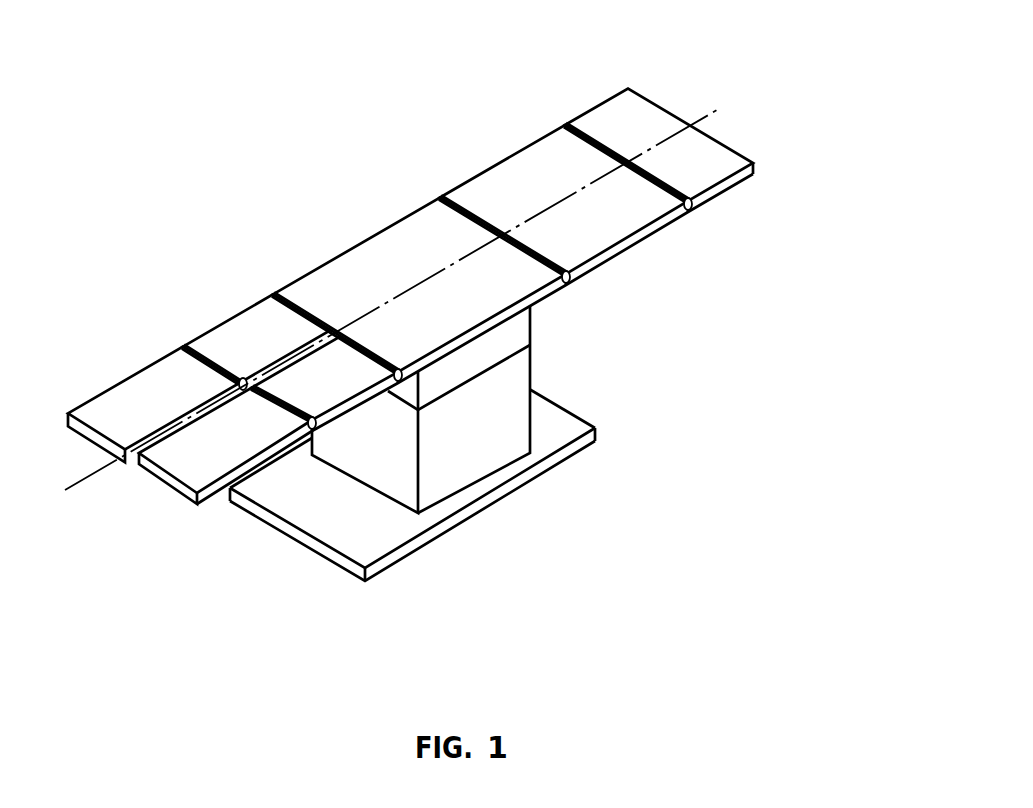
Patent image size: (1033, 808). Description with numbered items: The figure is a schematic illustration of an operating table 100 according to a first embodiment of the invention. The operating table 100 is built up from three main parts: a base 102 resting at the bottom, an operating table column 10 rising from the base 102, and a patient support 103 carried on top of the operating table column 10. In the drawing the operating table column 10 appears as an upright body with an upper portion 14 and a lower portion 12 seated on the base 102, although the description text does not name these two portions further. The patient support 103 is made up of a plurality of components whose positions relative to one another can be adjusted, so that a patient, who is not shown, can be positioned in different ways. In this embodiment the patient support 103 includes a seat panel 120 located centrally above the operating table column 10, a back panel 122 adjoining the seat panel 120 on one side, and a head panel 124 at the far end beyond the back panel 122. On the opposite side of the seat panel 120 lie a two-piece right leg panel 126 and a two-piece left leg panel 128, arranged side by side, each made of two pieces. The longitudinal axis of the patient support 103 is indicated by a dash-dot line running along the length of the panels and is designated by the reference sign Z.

The operating table 100 is at (409, 326).
The patient support 103 is at (409, 290).
The seat panel 120 is at (417, 228).
The back panel 122 is at (505, 175).
The head panel 124 is at (608, 113).
The two-piece right leg panel 126 is at (263, 317).
The two-piece left leg panel 128 is at (287, 385).
The operating table column 10 is at (430, 466).
The lower column 12 is at (472, 405).
The upper column 14 is at (517, 330).
The base 102 is at (365, 538).
The longitudinal axis Z is at (700, 112).